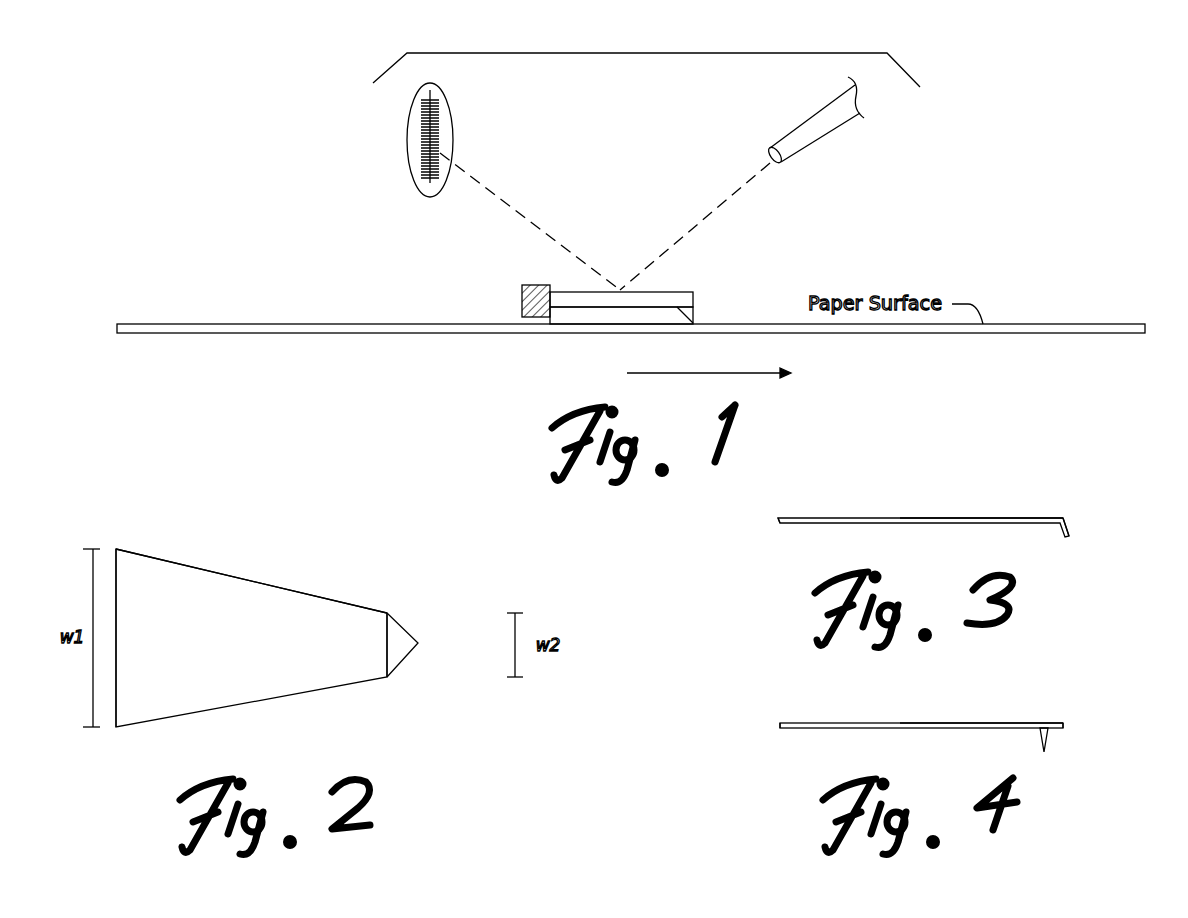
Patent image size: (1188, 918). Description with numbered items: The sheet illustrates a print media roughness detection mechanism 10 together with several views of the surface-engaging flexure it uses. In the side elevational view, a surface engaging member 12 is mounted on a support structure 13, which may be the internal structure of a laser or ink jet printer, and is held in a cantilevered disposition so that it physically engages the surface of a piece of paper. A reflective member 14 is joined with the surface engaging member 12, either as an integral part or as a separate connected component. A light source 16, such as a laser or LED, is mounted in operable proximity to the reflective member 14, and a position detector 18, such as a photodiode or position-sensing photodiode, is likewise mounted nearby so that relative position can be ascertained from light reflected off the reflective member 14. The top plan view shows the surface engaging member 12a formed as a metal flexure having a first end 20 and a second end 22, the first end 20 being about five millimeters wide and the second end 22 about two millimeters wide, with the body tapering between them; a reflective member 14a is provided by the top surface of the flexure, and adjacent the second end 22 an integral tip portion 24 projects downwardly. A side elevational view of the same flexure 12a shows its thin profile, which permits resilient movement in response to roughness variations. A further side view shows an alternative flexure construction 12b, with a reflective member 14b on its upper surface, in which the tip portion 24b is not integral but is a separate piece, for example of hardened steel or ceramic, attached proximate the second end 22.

In FIG. 1, the print media roughness detection mechanism 10 is at (620, 53).
In FIG. 1, the surface engaging member 12 is at (693, 312).
In FIG. 2, the surface engaging member 12a is at (223, 572).
In FIG. 3, the surface engaging member 12a is at (1017, 518).
In FIG. 4, the flexure construction 12b is at (1020, 723).
In FIG. 1, the support structure 13 is at (522, 292).
In FIG. 1, the reflective member 14 is at (597, 292).
In FIG. 2, the reflective member 14a is at (225, 648).
In FIG. 3, the reflective member 14a is at (914, 518).
In FIG. 4, the cleaning strip 14b is at (920, 723).
In FIG. 1, the light source 16 is at (788, 132).
In FIG. 1, the position detector 18 is at (452, 118).
In FIG. 2, the first end 20 is at (117, 548).
In FIG. 3, the first end 20 is at (778, 517).
In FIG. 4, the first end 20 is at (783, 723).
In FIG. 2, the second end 22 is at (389, 612).
In FIG. 3, the second end 22 is at (1067, 518).
In FIG. 4, the second end 22 is at (1067, 723).
In FIG. 2, the tip portion 24 is at (419, 642).
In FIG. 3, the tip portion 24 is at (1070, 538).
In FIG. 4, the tip portion 24b is at (1047, 752).